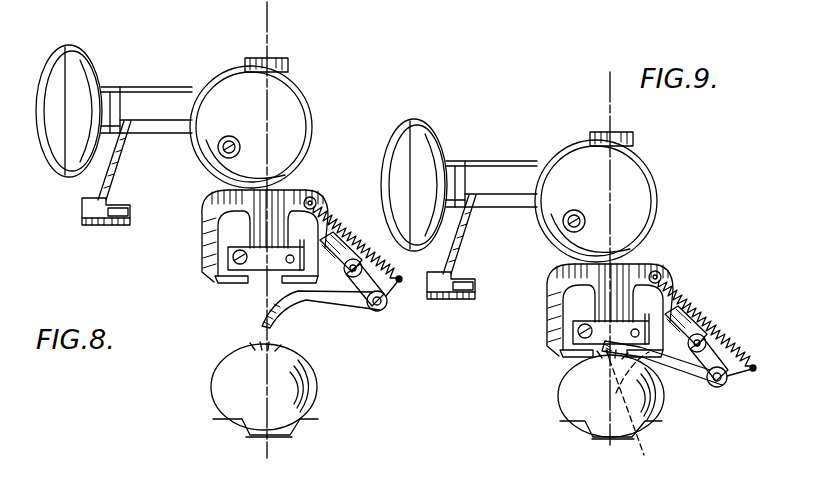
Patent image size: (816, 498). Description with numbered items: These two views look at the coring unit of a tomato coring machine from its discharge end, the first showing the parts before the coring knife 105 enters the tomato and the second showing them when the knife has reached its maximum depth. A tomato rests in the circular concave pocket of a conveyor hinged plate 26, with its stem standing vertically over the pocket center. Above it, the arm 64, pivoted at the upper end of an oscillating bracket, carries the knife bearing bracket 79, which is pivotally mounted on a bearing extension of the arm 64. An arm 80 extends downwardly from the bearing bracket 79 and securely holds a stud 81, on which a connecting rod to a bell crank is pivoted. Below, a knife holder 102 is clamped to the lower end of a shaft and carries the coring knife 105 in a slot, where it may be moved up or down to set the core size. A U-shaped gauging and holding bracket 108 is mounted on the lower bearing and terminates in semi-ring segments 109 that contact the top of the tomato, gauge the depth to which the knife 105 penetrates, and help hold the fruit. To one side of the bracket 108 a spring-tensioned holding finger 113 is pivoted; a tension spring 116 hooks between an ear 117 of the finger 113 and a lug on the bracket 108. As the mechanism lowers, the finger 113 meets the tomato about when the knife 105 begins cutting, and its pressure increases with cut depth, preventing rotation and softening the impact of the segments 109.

In FIG. 8, the conveyor hinged plate 26 is at (312, 421).
In FIG. 9, the conveyor hinged plate 26 is at (568, 424).
In FIG. 8, the arm 64 is at (104, 63).
In FIG. 9, the arm 64 is at (446, 121).
In FIG. 8, the knife bearing bracket 79 is at (302, 88).
In FIG. 9, the knife bearing bracket 79 is at (645, 165).
In FIG. 8, the arm 80 is at (110, 172).
In FIG. 9, the arm 80 is at (460, 236).
In FIG. 8, the stud 81 is at (124, 226).
In FIG. 9, the stud 81 is at (462, 286).
In FIG. 8, the knife holder 102 is at (262, 262).
In FIG. 9, the knife holder 102 is at (550, 322).
In FIG. 8, the coring knife 105 is at (300, 298).
In FIG. 9, the coring knife 105 is at (640, 430).
In FIG. 8, the gauging and holding bracket 108 is at (203, 222).
In FIG. 9, the gauging and holding bracket 108 is at (548, 294).
In FIG. 8, the semi-ring segments 109 is at (228, 278).
In FIG. 9, the semi-ring segments 109 is at (578, 354).
In FIG. 8, the tomato holding finger 113 is at (355, 297).
In FIG. 9, the tomato holding finger 113 is at (690, 372).
In FIG. 9, the tension spring 116 is at (688, 298).
In FIG. 8, the ear 117 is at (402, 286).
In FIG. 9, the ear 117 is at (742, 374).